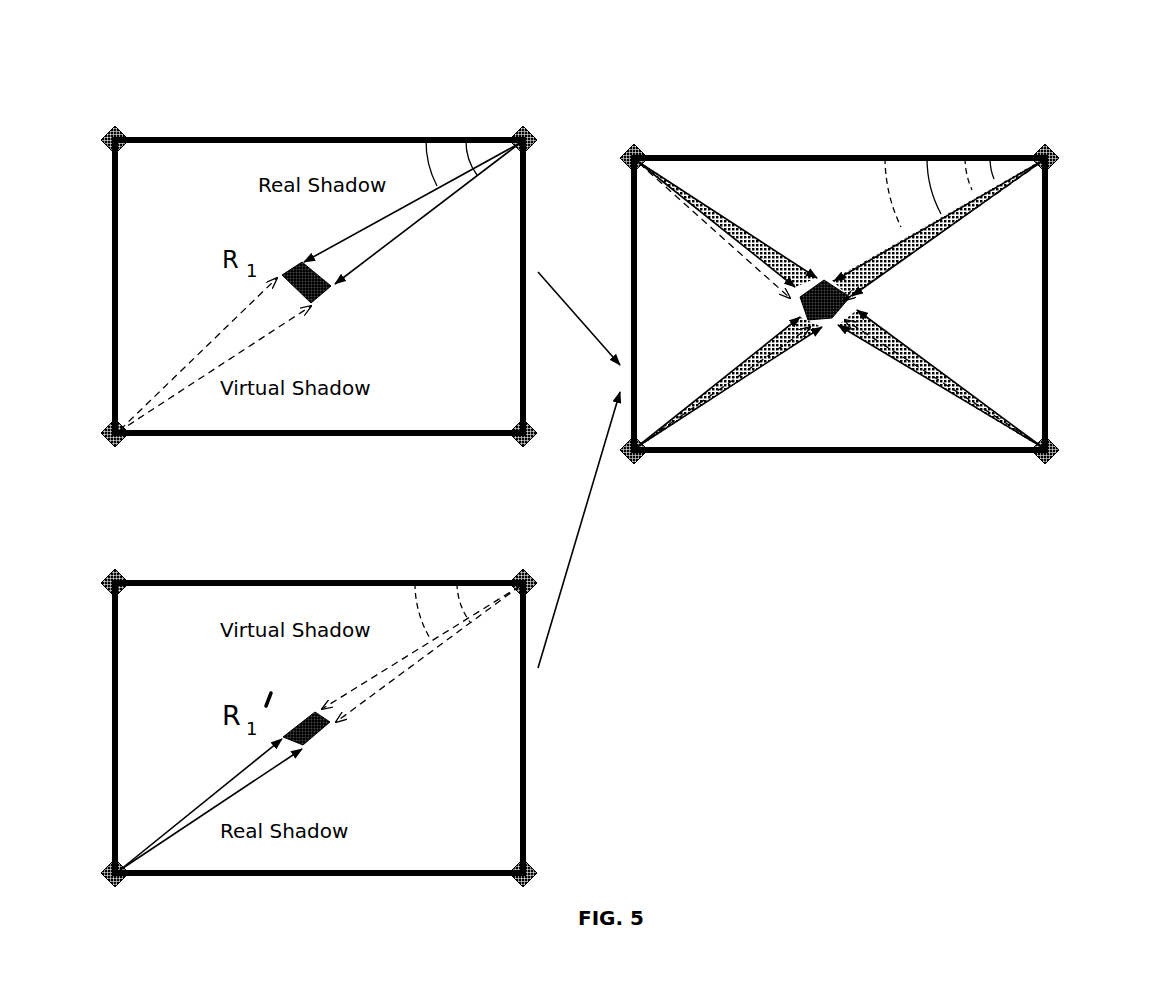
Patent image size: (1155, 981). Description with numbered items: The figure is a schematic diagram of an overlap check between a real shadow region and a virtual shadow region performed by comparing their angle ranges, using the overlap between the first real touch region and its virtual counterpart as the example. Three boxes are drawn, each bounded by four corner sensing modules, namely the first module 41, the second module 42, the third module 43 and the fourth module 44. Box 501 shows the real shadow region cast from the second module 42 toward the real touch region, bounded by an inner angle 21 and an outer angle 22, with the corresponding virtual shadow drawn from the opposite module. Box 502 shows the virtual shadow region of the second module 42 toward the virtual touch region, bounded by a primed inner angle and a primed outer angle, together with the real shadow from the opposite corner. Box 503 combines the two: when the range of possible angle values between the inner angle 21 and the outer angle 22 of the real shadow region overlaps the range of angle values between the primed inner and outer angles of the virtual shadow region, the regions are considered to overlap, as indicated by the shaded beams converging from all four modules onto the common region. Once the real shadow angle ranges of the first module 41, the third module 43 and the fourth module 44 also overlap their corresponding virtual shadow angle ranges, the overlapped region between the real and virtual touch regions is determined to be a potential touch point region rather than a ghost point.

The box 501 is at (321, 249).
The box 502 is at (319, 683).
The box 503 is at (740, 158).
The module 1 41 is at (173, 122).
The module 2 42 is at (471, 102).
The module 3 43 is at (173, 683).
The module 4 44 is at (463, 683).
The inner angle θ 21 is at (1057, 200).
The outer angle θ 22 is at (912, 102).